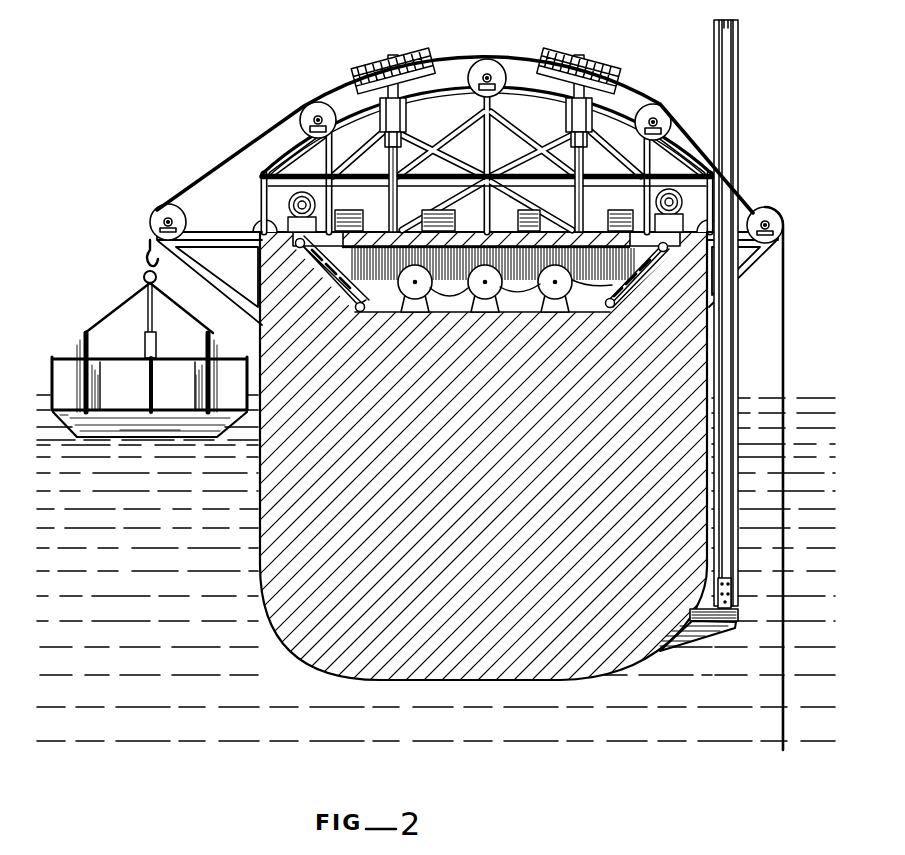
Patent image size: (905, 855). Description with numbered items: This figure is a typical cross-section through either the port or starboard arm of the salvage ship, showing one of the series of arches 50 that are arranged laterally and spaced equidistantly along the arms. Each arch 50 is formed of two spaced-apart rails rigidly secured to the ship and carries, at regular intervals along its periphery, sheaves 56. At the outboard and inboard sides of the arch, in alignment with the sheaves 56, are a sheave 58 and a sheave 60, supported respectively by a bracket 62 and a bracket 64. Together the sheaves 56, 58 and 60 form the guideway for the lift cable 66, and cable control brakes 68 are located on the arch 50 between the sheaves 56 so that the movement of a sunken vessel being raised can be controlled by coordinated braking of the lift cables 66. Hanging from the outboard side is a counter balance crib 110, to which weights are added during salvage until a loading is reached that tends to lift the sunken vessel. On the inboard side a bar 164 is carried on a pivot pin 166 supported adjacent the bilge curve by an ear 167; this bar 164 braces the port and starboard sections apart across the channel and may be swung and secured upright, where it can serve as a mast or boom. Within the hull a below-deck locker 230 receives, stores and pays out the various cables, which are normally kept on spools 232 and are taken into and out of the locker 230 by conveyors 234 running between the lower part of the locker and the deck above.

The arch 50 is at (287, 152).
The sheave 56 is at (312, 110).
The sheave 58 is at (160, 215).
The sheave 60 is at (775, 217).
The bracket 62 is at (193, 268).
The bracket 64 is at (757, 258).
The lift cable 66 is at (218, 163).
The cable control brake 68 is at (388, 60).
The counter balance crib 110 is at (83, 333).
The bar 164 is at (732, 98).
The pivot pin 166 is at (721, 619).
The ear 167 is at (700, 634).
The below-deck locker 230 is at (572, 285).
The spool 232 is at (431, 287).
The conveyor 234 is at (328, 282).